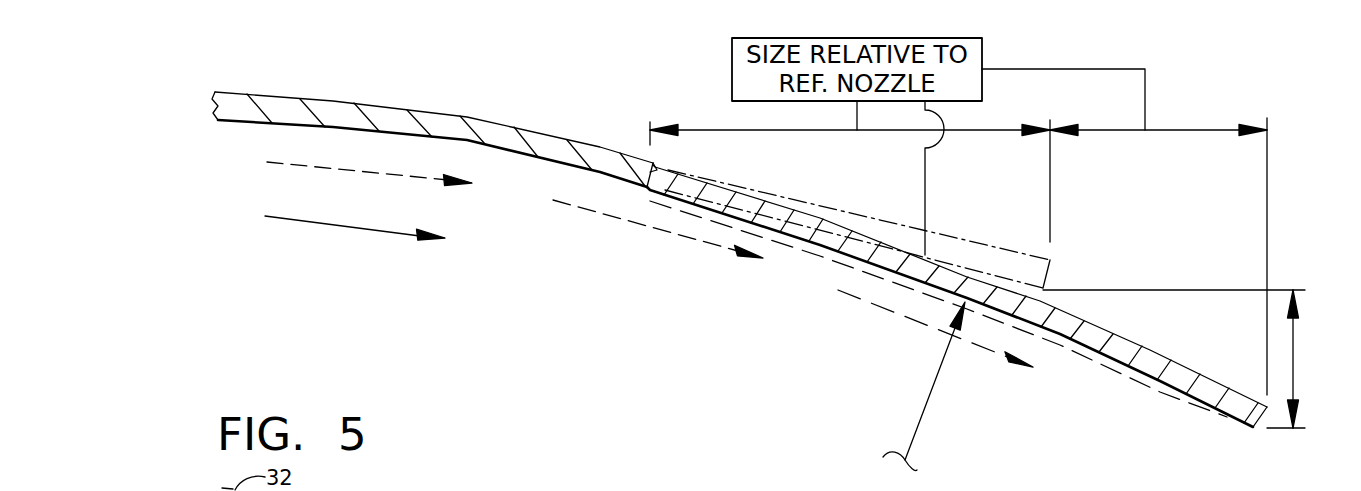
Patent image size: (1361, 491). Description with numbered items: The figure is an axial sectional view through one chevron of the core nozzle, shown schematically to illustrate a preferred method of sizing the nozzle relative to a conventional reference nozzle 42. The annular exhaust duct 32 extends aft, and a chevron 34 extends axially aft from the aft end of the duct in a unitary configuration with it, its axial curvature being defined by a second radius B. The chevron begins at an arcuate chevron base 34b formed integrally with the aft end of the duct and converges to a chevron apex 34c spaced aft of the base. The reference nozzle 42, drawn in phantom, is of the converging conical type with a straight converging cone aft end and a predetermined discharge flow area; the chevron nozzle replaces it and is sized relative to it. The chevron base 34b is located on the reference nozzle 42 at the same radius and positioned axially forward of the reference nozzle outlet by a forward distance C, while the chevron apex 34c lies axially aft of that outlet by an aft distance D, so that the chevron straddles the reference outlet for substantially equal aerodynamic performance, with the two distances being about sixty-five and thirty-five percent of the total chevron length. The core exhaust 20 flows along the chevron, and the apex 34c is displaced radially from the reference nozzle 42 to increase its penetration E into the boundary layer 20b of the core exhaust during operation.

The core exhaust 20 is at (350, 222).
The boundary layer 20b is at (353, 170).
The exhaust duct 32 is at (283, 95).
The chevron 34 is at (1153, 345).
The chevron base 34b is at (650, 172).
The chevron apex 34c is at (1258, 428).
The reference nozzle 42 is at (1052, 260).
The second radius B is at (925, 405).
The forward distance C is at (827, 130).
The aft distance D is at (1163, 130).
The penetration E is at (1293, 358).